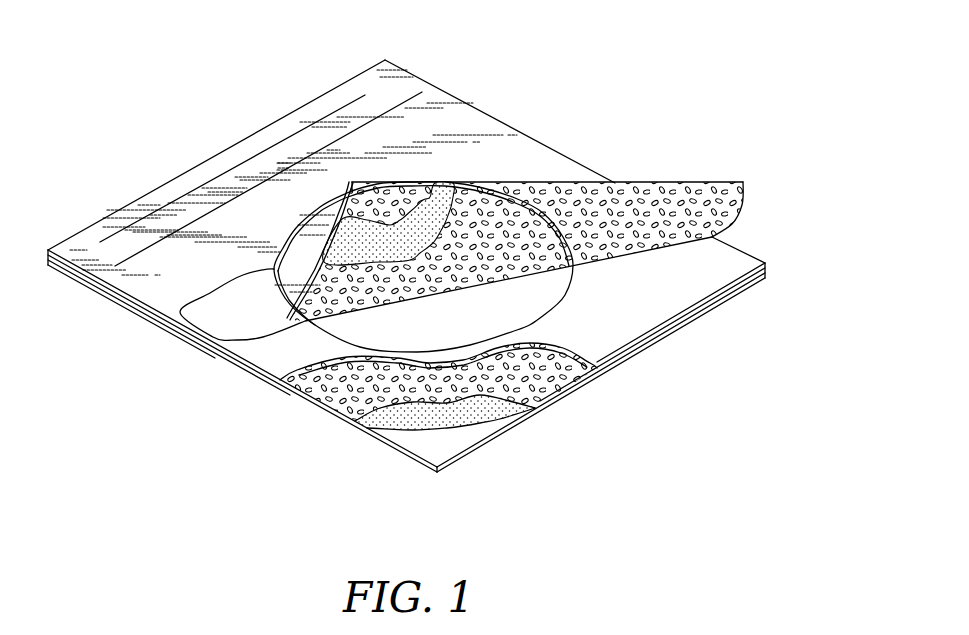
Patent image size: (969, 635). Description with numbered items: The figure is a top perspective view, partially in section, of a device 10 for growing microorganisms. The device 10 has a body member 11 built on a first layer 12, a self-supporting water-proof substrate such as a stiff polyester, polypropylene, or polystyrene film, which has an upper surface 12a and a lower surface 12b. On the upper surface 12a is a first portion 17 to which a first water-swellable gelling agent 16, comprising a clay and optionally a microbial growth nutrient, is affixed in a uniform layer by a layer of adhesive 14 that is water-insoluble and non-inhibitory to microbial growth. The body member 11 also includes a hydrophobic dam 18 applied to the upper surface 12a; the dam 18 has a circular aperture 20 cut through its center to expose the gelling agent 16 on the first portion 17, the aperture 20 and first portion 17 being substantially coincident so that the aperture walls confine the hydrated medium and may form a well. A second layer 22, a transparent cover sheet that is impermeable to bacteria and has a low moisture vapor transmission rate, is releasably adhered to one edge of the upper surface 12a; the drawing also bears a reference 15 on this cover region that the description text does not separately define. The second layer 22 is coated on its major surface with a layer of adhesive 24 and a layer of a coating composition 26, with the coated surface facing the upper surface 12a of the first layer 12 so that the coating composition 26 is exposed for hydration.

The device 10 is at (640, 58).
The body member 11 is at (632, 358).
The first layer 12 is at (462, 460).
The upper surface 12a is at (432, 445).
The lower surface 12b is at (575, 392).
The layer of adhesive 14 is at (520, 410).
The top transparent cover layer 15 is at (252, 148).
The first water-swellable gelling agent 16 is at (303, 397).
The first portion 17 is at (461, 333).
The hydrophobic dam 18 is at (662, 289).
The circular aperture 20 is at (178, 313).
The second layer 22 is at (425, 112).
The layer of adhesive 24 is at (433, 195).
The layer of coating composition 26 is at (703, 207).